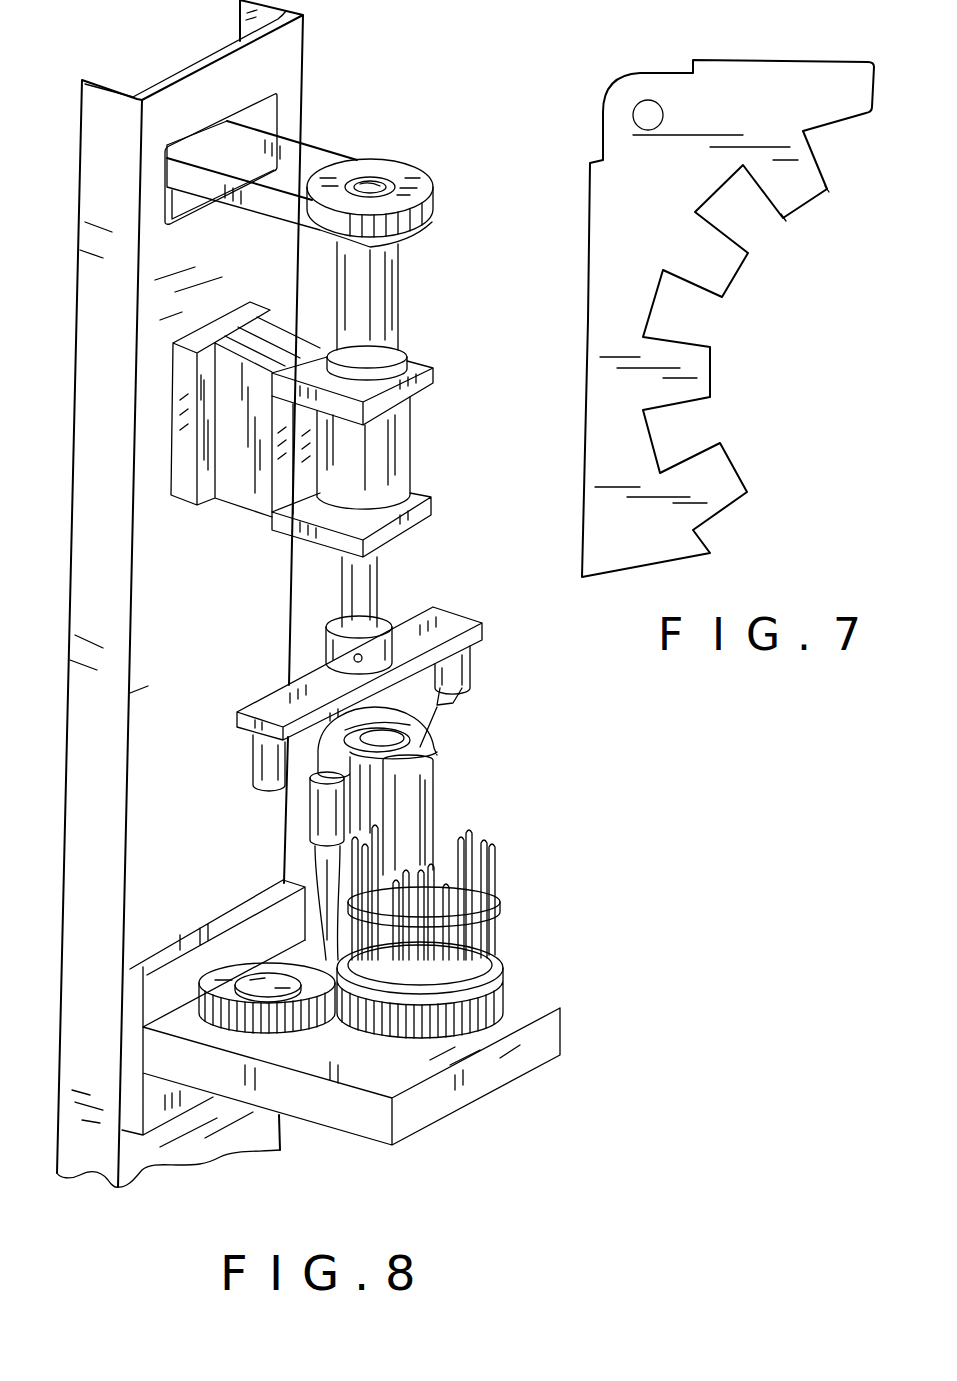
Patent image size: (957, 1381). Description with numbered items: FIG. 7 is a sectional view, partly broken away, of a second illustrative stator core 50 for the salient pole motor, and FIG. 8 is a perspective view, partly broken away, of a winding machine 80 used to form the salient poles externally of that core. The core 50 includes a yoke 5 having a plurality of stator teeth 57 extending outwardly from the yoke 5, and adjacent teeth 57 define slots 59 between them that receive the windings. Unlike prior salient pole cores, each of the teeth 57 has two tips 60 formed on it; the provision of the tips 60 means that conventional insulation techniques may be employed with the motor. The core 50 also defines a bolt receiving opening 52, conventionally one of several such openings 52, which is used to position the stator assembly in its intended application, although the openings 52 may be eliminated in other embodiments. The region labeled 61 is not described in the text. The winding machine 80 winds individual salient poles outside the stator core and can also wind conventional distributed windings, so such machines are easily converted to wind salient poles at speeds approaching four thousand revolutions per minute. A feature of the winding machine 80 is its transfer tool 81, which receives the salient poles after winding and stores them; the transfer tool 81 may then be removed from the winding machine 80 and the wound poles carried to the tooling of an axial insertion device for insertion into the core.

In FIG. 7, the core 50 is at (787, 77).
In FIG. 7, the bolt receiving opening 52 is at (648, 100).
In FIG. 7, the yoke 5 is at (735, 114).
In FIG. 7, the stator teeth 57 is at (808, 194).
In FIG. 7, the slots 59 is at (752, 220).
In FIG. 7, the tooth tips 60 is at (828, 191).
In FIG. 7, the notch 61 is at (731, 332).
In FIG. 8, the winding machine 80 is at (423, 568).
In FIG. 8, the transfer tool 81 is at (497, 937).